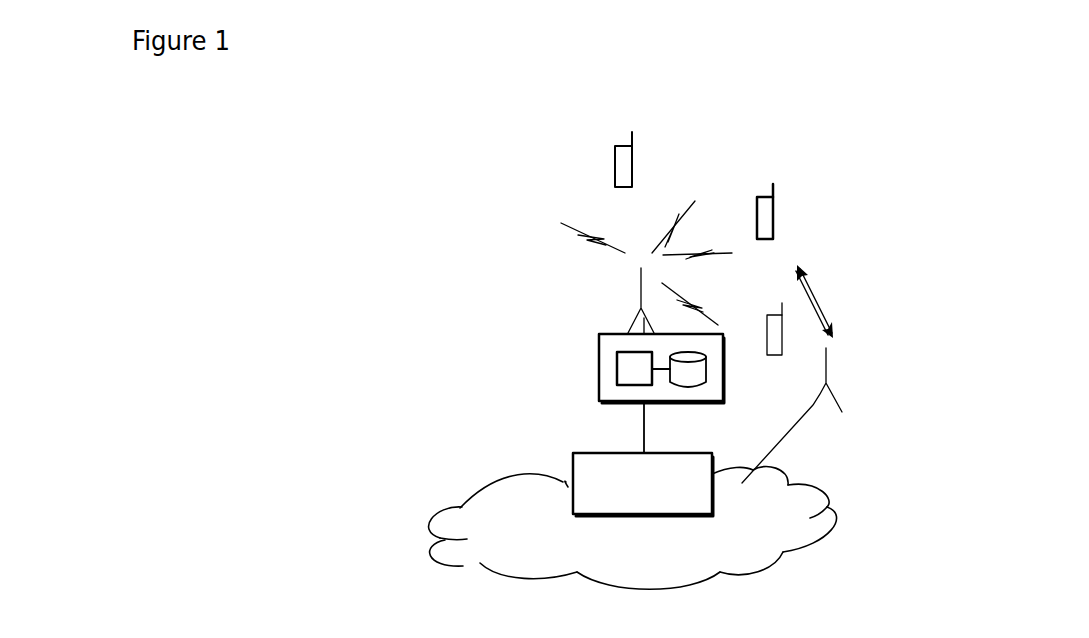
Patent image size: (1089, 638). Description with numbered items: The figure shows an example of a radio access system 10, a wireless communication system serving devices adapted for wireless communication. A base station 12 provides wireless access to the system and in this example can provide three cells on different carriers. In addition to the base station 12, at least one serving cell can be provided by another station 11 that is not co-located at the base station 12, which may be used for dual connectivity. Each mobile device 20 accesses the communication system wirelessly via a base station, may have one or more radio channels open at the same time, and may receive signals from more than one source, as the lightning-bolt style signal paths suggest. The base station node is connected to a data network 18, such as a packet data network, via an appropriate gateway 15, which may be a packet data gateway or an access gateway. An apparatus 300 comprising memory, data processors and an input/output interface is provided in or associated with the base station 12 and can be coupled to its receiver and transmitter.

The radio access system 10 is at (492, 217).
The base station 12 is at (635, 303).
The apparatus 300 is at (599, 369).
The gateway 15 is at (573, 478).
The data network 18 is at (487, 518).
The mobile device 20 is at (775, 222).
The station 11 is at (831, 363).